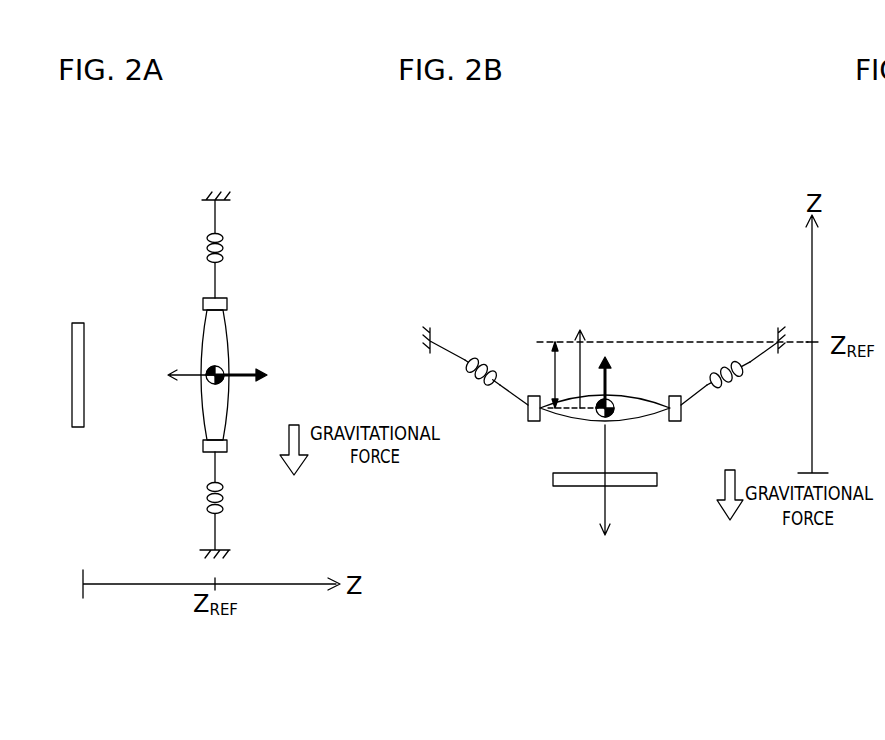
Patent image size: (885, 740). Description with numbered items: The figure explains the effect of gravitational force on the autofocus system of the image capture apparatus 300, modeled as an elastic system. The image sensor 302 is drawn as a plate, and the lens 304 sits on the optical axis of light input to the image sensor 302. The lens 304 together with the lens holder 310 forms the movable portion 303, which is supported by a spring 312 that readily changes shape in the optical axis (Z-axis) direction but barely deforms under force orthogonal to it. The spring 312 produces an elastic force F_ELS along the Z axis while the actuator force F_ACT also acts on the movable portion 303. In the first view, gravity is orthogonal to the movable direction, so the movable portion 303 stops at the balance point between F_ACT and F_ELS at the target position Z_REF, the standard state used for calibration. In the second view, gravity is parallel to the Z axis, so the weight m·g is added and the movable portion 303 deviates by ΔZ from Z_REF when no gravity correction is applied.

In FIG. 2A, the image capture apparatus 300 is at (334, 188).
In FIG. 2B, the image capture apparatus 300 is at (706, 188).
In FIG. 2A, the image sensor 302 is at (78, 428).
In FIG. 2B, the image sensor 302 is at (553, 480).
In FIG. 2A, the AF movable portion 303 is at (304, 287).
In FIG. 2A, the lens 304 is at (231, 345).
In FIG. 2A, the lens holder 310 is at (228, 304).
In FIG. 2A, the spring 312 is at (232, 245).
In FIG. 2B, the spring 312 is at (738, 383).